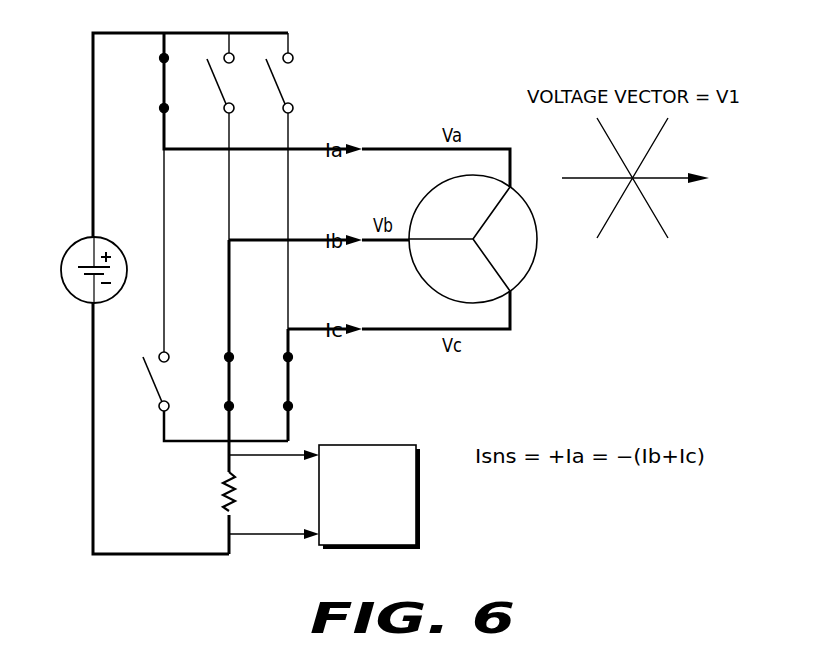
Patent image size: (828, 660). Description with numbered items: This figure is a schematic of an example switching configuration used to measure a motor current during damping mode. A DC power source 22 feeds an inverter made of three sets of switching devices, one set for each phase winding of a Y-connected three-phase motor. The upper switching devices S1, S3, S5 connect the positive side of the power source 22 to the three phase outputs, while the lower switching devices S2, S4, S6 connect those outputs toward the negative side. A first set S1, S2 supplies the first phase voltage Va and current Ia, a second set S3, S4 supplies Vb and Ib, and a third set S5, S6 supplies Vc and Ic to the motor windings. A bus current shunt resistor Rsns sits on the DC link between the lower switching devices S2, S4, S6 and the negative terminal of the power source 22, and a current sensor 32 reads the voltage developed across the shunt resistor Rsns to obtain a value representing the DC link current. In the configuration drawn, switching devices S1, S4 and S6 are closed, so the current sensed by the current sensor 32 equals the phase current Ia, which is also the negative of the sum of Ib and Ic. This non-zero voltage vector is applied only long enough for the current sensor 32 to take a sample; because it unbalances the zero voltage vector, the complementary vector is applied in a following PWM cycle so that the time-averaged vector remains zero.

The power source 22 is at (62, 266).
The current sensing device 32 is at (418, 544).
The switching device S1 is at (150, 203).
The switching device S2 is at (150, 395).
The switching device S3 is at (209, 136).
The switching device S4 is at (210, 356).
The switching device S5 is at (269, 181).
The switching device S6 is at (270, 385).
The bus current shunt resistor Rsns is at (208, 513).